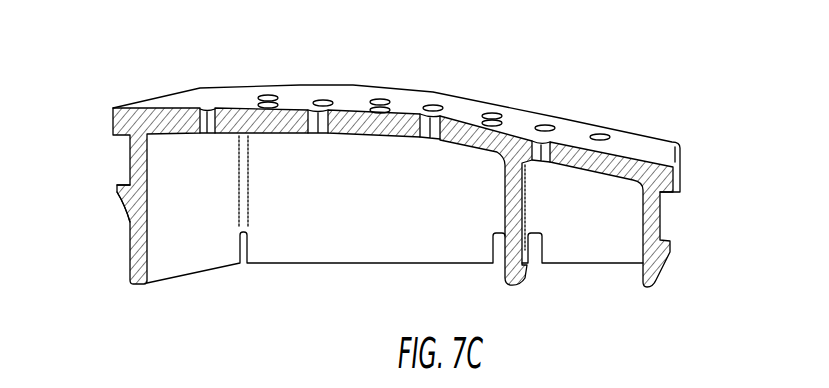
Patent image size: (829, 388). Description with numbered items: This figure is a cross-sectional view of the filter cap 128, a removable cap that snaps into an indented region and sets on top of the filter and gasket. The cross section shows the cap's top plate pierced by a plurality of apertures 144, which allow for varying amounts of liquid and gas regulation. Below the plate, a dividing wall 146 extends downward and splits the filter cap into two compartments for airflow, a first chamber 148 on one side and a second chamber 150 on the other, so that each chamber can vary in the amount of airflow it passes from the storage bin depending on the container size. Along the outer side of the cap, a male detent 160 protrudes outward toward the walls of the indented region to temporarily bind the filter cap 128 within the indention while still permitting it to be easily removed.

The filter cap 128 is at (675, 147).
The apertures 144 is at (433, 127).
The dividing wall 146 is at (510, 287).
The first chamber 148 is at (347, 237).
The second chamber 150 is at (588, 245).
The male detents 160 is at (117, 189).